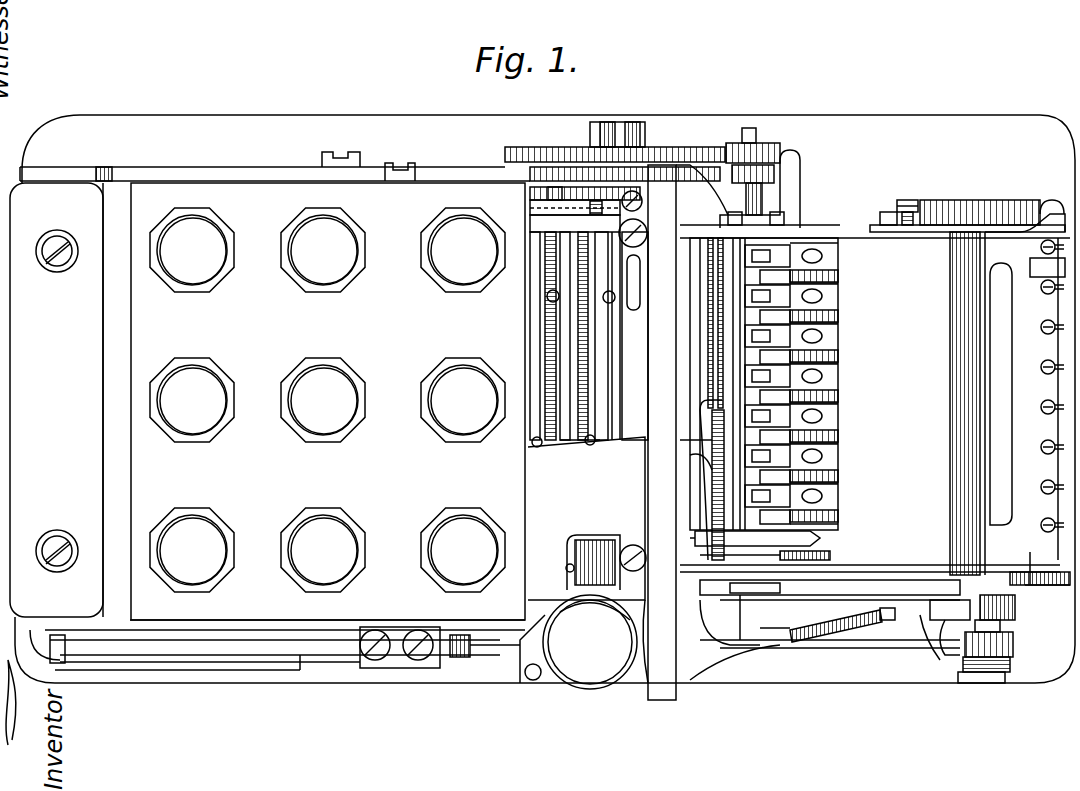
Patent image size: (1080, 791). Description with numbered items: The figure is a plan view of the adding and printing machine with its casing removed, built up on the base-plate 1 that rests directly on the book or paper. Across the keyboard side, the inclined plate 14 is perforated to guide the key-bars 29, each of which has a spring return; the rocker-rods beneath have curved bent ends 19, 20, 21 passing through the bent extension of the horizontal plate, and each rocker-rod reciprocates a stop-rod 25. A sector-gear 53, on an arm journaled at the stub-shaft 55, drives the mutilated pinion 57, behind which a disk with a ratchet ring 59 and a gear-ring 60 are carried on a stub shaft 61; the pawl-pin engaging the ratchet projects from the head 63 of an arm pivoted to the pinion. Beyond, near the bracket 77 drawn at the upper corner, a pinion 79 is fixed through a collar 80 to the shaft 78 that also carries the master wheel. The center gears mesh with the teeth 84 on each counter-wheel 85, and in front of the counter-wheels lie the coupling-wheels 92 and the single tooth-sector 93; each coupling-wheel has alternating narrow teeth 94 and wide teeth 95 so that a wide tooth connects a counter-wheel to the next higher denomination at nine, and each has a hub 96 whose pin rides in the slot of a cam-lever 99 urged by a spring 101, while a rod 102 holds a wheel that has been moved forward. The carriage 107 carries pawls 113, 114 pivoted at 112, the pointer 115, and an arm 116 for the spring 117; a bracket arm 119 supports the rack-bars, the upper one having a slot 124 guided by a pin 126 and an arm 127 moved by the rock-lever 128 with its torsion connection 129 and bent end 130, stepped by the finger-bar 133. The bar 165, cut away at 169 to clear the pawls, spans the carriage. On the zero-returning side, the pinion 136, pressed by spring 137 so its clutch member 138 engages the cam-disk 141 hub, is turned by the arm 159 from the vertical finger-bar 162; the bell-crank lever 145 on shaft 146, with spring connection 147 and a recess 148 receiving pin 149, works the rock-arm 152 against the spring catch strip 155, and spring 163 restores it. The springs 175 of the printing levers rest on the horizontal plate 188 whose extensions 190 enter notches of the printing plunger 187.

The base-plate 1 is at (311, 674).
The inclined plate 14 is at (314, 401).
The curved bent end of rocker-rod 19 is at (547, 297).
The curved bent end of rocker-rod 20 is at (590, 440).
The curved bent end of rocker-rod 21 is at (614, 306).
The stop-rod 25 is at (600, 212).
The key-bars 29 is at (296, 280).
The sector-gear 53 is at (530, 192).
The stub-shaft 55 is at (403, 162).
The mutilated pinion 57 is at (550, 201).
The ratchet ring 59 is at (530, 172).
The gear-ring 60 is at (521, 148).
The stub shaft 61 is at (632, 123).
The head 63 is at (706, 196).
The bracket arm 77 is at (800, 162).
The shaft 78 is at (766, 199).
The pinion 79 is at (782, 150).
The collar 80 is at (778, 178).
The teeth of counter-wheel 84 is at (838, 278).
The counter-wheel 85 is at (836, 355).
The coupling-wheels 92 is at (742, 340).
The tooth-sector 93 is at (832, 556).
The narrow teeth 94 is at (752, 285).
The wide teeth 95 is at (746, 318).
The hub 96 is at (836, 445).
The cam-lever 99 is at (836, 336).
The spring 101 is at (714, 403).
The rod 102 is at (836, 257).
The carriage 107 is at (700, 476).
The pivot 112 is at (619, 519).
The pawl 113 is at (648, 592).
The pawl 114 is at (657, 553).
The pointer 115 is at (826, 536).
The arm 116 is at (658, 412).
The spring 117 is at (700, 441).
The bracket arm 119 is at (648, 602).
The slot 124 is at (622, 626).
The pin 126 is at (623, 553).
The arm 127 is at (528, 487).
The rock-lever 128 is at (258, 645).
The spring torsion connection 129 is at (465, 660).
The bent end 130 is at (42, 642).
The finger-bar 133 is at (56, 400).
The pinion 136 is at (1013, 648).
The spring 137 is at (1012, 676).
The clutch member 138 is at (1000, 628).
The cam-disk 141 is at (1000, 585).
The bell-crank lever 145 is at (905, 590).
The shaft 146 is at (980, 662).
The spring connection 147 is at (936, 612).
The recess 148 is at (945, 612).
The pin 149 is at (1006, 614).
The rock-arm 152 is at (752, 598).
The spring catch strip 155 is at (818, 620).
The arm 159 is at (880, 628).
The vertical finger-bar 162 is at (600, 662).
The spring 163 is at (856, 645).
The bar 165 is at (666, 655).
The cut-away 169 is at (700, 465).
The spring 175 is at (1046, 450).
The plunger 187 is at (982, 403).
The horizontal plate 188 is at (1010, 358).
The extension 190 is at (990, 535).